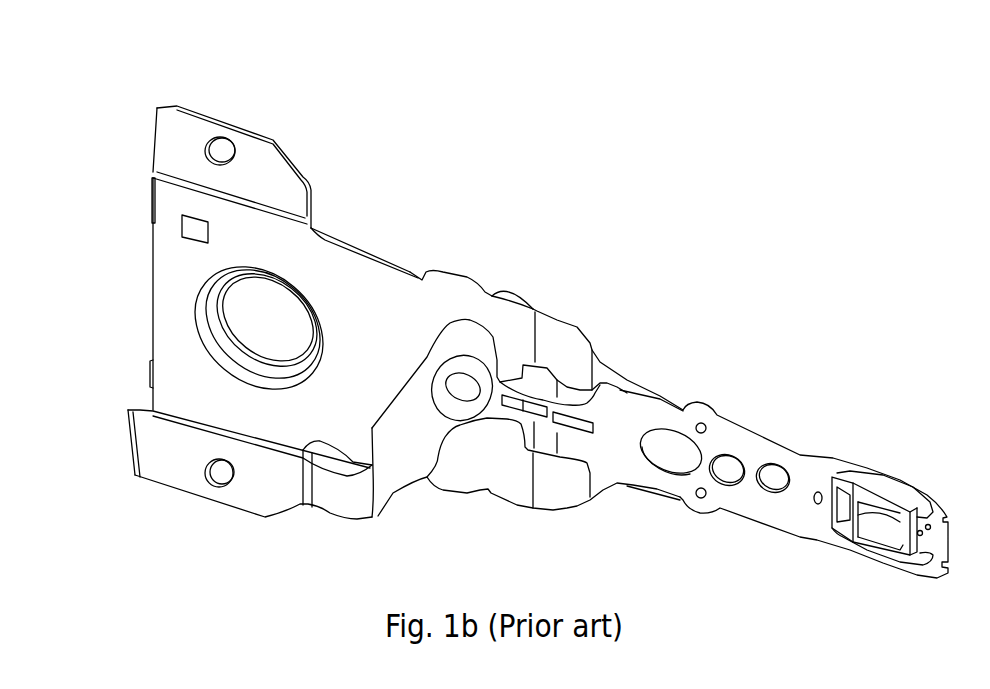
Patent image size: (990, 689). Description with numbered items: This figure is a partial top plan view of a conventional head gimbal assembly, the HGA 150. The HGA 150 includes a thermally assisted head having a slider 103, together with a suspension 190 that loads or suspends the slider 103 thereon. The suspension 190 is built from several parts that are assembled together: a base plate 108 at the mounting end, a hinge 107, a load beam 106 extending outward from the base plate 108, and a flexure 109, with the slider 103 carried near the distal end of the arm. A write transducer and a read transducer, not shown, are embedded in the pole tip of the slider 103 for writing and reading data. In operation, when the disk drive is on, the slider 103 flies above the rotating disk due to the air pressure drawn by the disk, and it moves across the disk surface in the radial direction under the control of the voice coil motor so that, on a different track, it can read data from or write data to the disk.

The HGA 150 is at (224, 63).
The suspension 190 is at (760, 222).
The base plate 108 is at (510, 292).
The hinge 107 is at (548, 330).
The load beam 106 is at (600, 375).
The flexure 109 is at (735, 445).
The slider 103 is at (877, 530).